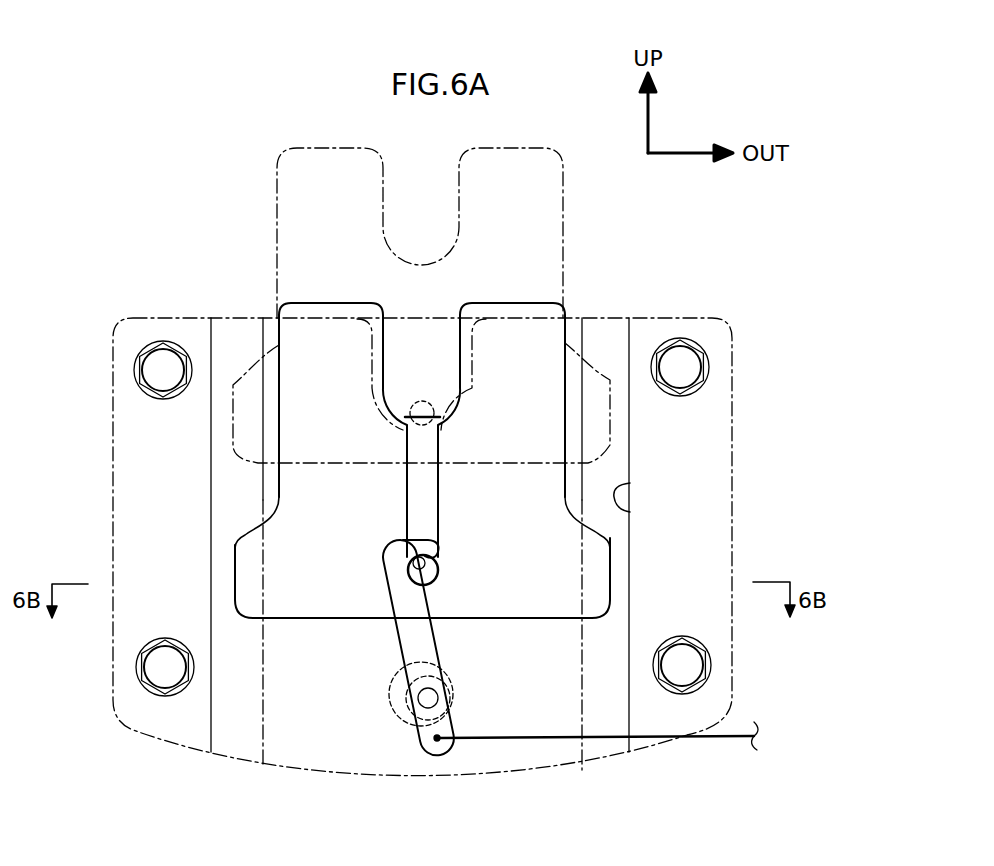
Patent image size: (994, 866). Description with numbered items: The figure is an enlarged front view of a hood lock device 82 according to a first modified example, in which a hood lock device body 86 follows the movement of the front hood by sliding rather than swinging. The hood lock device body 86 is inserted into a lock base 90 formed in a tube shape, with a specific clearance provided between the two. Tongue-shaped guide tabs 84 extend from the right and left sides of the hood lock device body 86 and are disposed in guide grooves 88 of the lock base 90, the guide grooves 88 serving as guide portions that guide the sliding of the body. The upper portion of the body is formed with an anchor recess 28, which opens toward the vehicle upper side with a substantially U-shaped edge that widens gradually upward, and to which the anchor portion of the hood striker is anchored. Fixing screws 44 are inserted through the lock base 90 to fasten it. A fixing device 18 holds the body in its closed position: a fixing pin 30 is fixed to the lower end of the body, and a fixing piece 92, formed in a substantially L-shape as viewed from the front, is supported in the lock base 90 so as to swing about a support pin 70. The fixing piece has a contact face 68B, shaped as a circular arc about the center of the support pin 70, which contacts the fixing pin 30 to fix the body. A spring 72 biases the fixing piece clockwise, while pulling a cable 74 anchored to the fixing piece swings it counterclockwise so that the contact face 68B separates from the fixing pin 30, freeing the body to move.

The fixing device 18 is at (412, 742).
The anchor recess 28 is at (401, 408).
The fixing pin 30 is at (440, 556).
The fixing screws 44 is at (143, 362).
The contact face 68B is at (403, 553).
The support pin 70 is at (430, 697).
The spring 72 is at (453, 700).
The cable 74 is at (708, 739).
The hood lock device 82 is at (185, 243).
The guide tabs 84 is at (235, 540).
The hood lock device body 86 is at (542, 300).
The guide grooves 88 is at (630, 490).
The lock base 90 is at (668, 318).
The fixing piece 92 is at (397, 647).